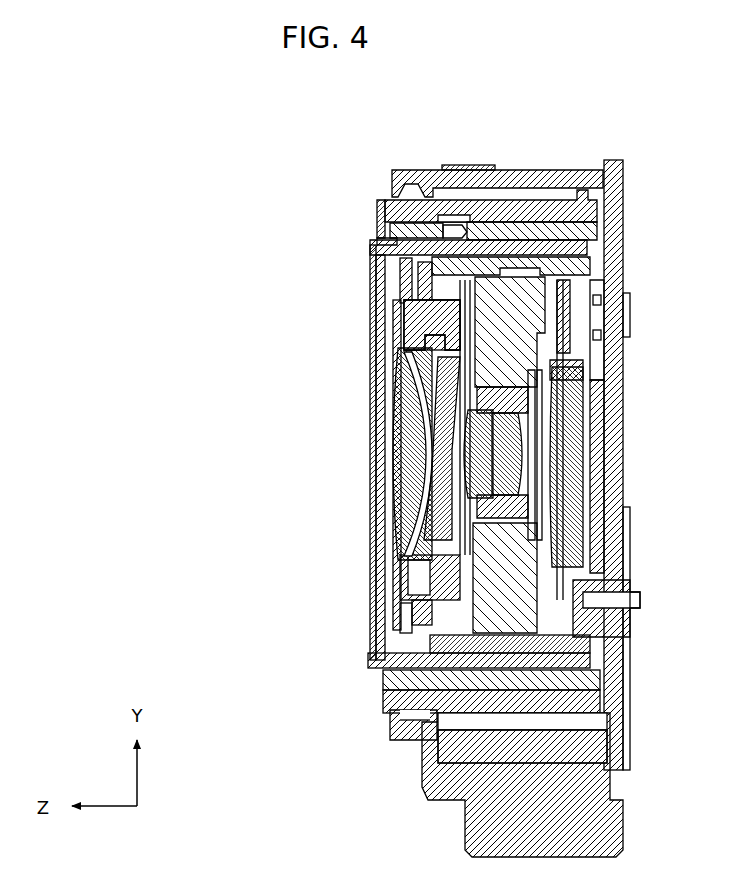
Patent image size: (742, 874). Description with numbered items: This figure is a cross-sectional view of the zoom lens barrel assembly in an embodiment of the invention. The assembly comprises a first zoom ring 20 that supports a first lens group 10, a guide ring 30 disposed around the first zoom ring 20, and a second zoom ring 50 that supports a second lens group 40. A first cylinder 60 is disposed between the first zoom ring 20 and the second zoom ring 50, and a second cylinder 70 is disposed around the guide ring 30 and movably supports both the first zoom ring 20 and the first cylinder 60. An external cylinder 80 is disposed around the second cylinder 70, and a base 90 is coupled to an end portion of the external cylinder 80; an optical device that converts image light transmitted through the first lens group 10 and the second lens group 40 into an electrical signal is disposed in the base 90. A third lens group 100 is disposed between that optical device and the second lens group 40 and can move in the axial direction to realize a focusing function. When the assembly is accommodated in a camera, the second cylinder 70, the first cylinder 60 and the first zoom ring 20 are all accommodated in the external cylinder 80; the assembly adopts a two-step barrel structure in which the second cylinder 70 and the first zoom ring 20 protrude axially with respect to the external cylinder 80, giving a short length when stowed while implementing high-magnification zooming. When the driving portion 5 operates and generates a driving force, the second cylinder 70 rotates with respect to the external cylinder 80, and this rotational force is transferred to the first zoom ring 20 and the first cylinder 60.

The driving portion 5 is at (620, 808).
The first lens group 10 is at (410, 465).
The first zoom ring 20 is at (455, 240).
The guide ring 30 is at (591, 232).
The second lens group 40 is at (505, 460).
The second zoom ring 50 is at (530, 597).
The first cylinder 60 is at (578, 285).
The second cylinder 70 is at (521, 196).
The external cylinder 80 is at (562, 170).
The base 90 is at (624, 165).
The third lens group 100 is at (578, 436).